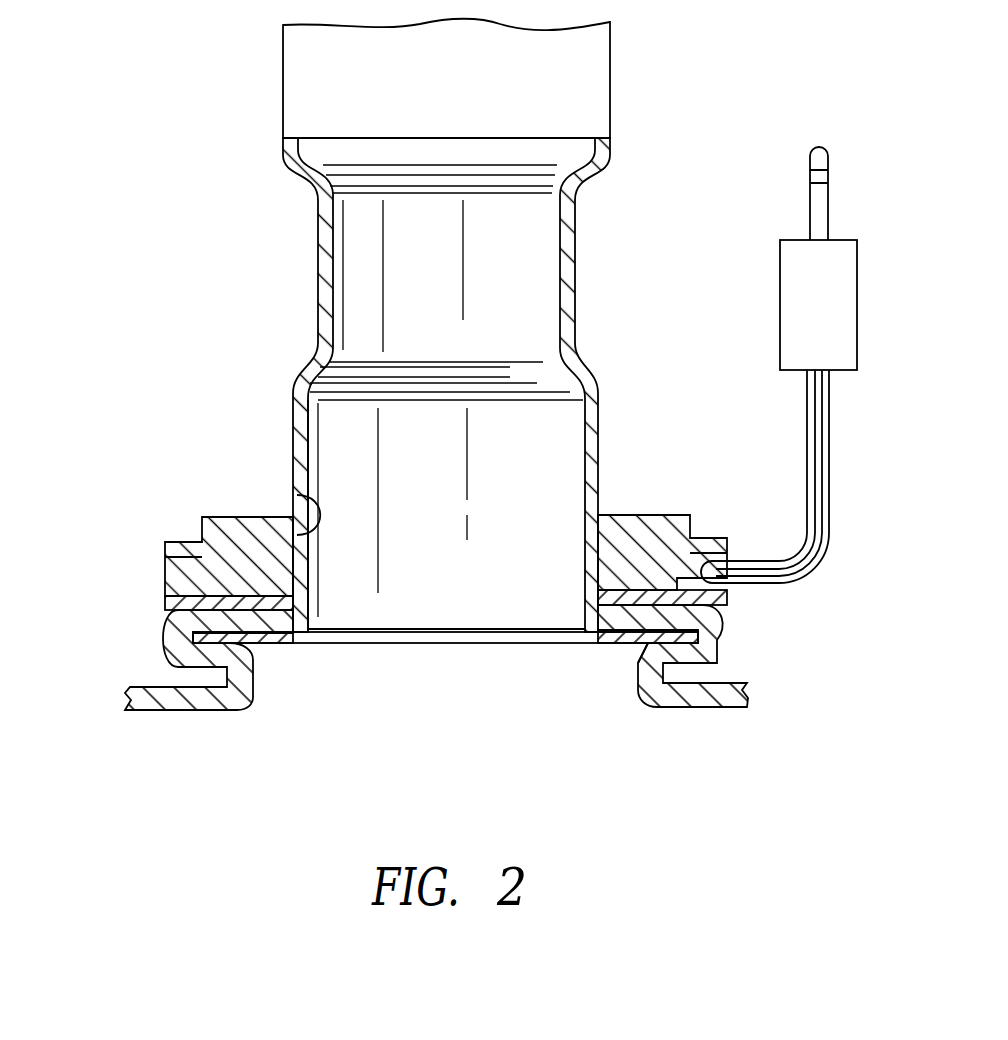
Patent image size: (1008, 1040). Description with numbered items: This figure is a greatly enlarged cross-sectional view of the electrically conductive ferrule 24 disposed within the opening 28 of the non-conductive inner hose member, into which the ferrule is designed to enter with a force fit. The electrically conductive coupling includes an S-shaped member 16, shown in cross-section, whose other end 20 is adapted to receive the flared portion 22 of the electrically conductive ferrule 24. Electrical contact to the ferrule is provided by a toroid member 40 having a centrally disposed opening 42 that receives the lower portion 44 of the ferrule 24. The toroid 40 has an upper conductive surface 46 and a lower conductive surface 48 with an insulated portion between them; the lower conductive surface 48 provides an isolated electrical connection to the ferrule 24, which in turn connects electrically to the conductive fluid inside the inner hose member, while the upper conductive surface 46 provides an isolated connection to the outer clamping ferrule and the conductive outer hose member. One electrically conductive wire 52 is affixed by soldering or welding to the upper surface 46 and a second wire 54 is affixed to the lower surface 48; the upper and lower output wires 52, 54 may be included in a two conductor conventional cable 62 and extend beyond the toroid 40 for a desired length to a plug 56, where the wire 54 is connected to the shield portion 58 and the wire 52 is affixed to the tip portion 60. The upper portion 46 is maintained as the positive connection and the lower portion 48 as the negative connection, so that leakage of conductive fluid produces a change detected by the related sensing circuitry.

The S-shaped member 16 is at (736, 637).
The other end of the S-shaped member 20 is at (167, 647).
The flared portion 22 is at (627, 643).
The electrically conductive ferrule 24 is at (583, 256).
The opening 28 is at (284, 97).
The toroid member 40 is at (156, 577).
The centrally disposed opening 42 is at (298, 494).
The lower portion 44 is at (309, 583).
The upper conductive surface 46 is at (710, 540).
The lower conductive surface 48 is at (729, 597).
The upper output wire 52 is at (763, 469).
The lower output wire 54 is at (830, 542).
The plug 56 is at (820, 287).
The shield portion 58 is at (818, 210).
The tip portion 60 is at (819, 156).
The two conductor cable 62 is at (789, 476).